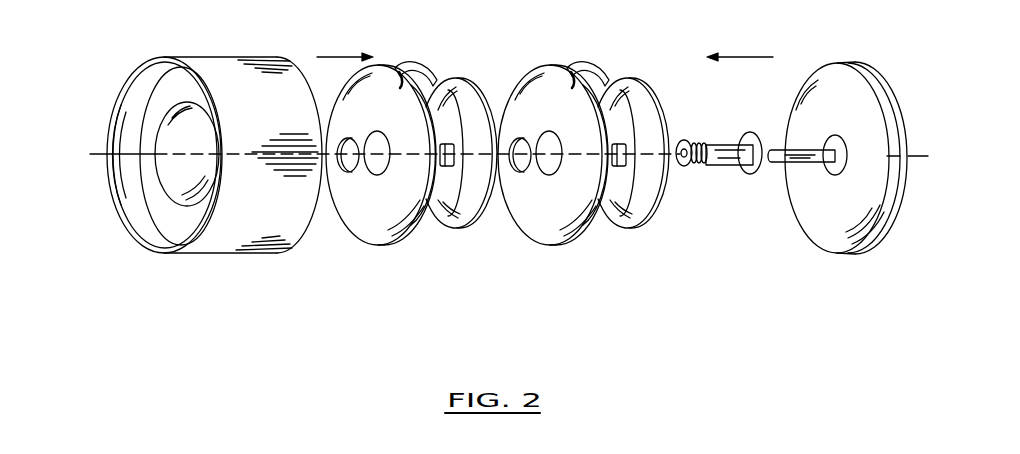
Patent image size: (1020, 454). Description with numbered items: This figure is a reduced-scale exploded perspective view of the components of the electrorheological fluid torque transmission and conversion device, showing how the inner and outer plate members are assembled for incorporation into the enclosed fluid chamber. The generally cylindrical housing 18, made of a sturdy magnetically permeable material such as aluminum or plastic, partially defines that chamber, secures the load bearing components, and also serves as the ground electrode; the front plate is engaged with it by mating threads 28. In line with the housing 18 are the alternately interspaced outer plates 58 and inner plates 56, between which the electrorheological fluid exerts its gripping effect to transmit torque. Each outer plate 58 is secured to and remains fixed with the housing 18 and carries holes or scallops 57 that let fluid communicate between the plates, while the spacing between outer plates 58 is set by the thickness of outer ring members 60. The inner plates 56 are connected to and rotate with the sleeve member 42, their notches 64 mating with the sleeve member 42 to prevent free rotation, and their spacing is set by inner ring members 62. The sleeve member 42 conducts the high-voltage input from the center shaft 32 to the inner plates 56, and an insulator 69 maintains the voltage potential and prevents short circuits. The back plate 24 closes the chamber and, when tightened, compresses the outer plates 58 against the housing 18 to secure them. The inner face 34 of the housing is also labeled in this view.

The housing 18 is at (213, 80).
The back plate 24 is at (822, 220).
The mating threads 28 is at (112, 138).
The center shaft 32 is at (790, 182).
The housing inner face 34 is at (163, 102).
The sleeve member 42 is at (712, 145).
The inner plates 56 is at (468, 232).
The holes or scallops 57 is at (405, 74).
The outer plates 58 is at (366, 233).
The outer ring members 60 is at (426, 237).
The inner ring members 62 is at (341, 172).
The notches 64 is at (448, 143).
The insulator 69 is at (828, 135).